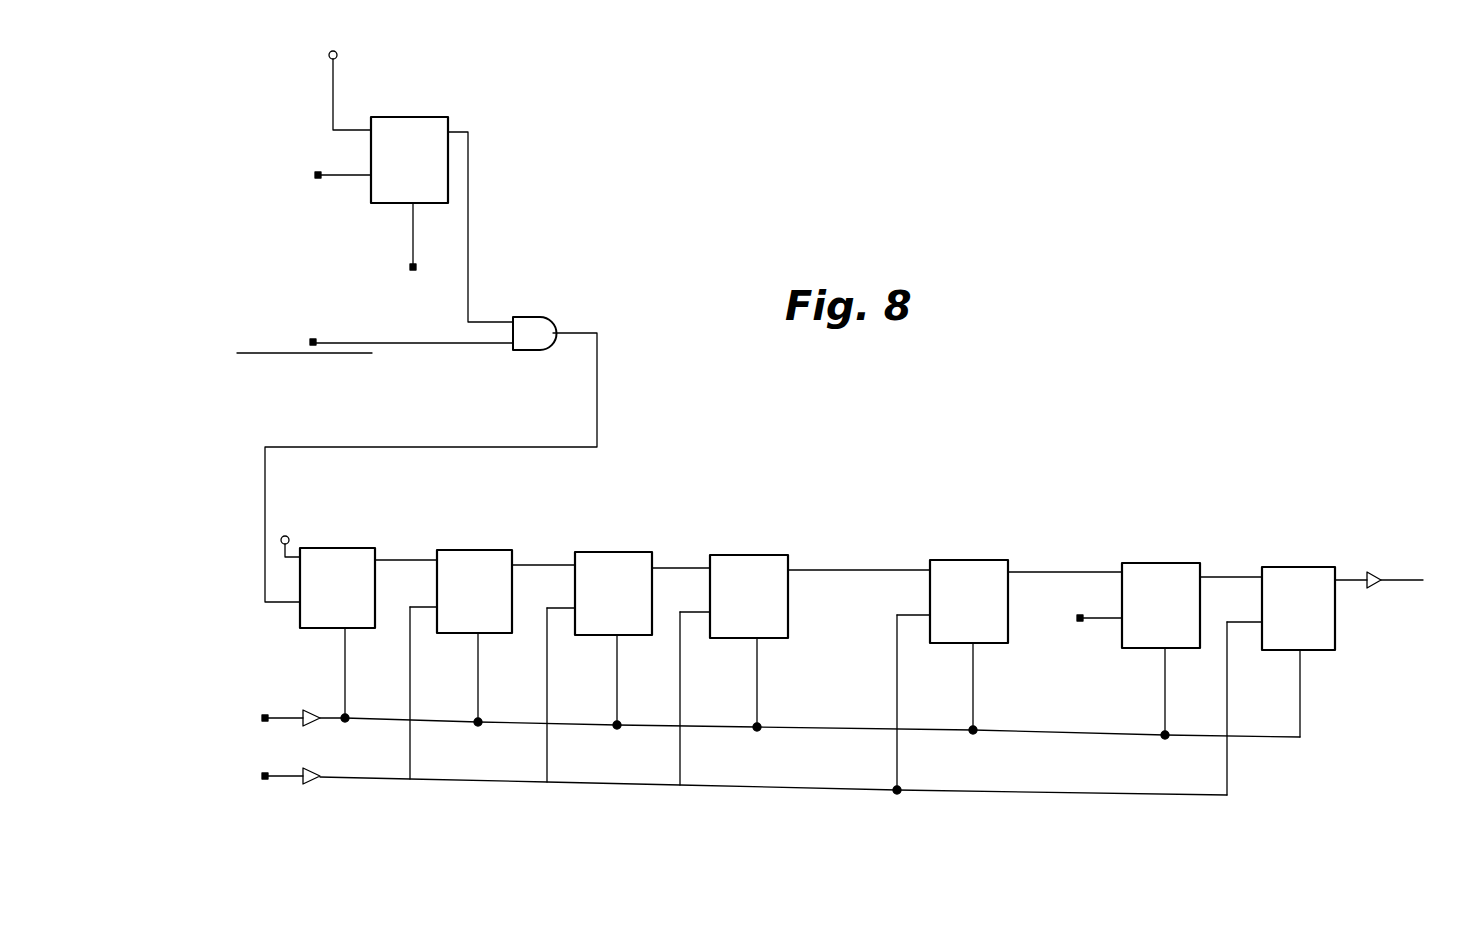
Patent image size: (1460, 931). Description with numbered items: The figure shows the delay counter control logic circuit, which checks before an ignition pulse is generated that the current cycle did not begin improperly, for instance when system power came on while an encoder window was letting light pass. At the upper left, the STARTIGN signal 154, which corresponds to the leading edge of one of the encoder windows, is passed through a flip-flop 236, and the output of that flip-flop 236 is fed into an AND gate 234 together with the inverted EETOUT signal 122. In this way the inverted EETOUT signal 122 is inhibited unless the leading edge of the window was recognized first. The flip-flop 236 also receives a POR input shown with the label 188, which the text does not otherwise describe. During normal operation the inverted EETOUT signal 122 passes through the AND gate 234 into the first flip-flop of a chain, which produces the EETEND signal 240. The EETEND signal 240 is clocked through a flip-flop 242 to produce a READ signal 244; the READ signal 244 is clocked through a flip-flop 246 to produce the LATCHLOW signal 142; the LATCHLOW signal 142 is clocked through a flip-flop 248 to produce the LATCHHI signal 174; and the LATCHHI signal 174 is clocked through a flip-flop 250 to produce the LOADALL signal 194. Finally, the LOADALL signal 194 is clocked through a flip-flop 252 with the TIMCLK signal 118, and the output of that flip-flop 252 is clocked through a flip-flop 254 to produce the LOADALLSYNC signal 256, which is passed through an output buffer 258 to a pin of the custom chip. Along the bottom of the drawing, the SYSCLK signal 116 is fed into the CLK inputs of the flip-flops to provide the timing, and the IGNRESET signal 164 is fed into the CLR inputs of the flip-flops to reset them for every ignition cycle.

The flip-flop 236 is at (413, 117).
The STARTIGN signal 154 is at (281, 150).
The POR power-on reset signal 188 is at (367, 297).
The AND gate 234 is at (540, 325).
The inverted EETOUT signal 122 is at (301, 382).
The EETEND signal 240 is at (430, 515).
The READ signal 244 is at (566, 517).
The LATCHLOW signal 142 is at (726, 523).
The LATCHHI signal 174 is at (924, 520).
The LOADALL signal 194 is at (1062, 527).
The LOADALLSYNC signal 256 is at (1375, 522).
The output buffer 258 is at (1379, 590).
The flip-flop 242 is at (445, 636).
The flip-flop 246 is at (585, 638).
The flip-flop 248 is at (738, 641).
The flip-flop 250 is at (940, 646).
The flip-flop 252 is at (1140, 651).
The flip-flop 254 is at (1322, 651).
The TIMCLK signal 118 is at (1050, 655).
The IGNRESET signal 164 is at (197, 697).
The SYSCLK signal 116 is at (195, 794).